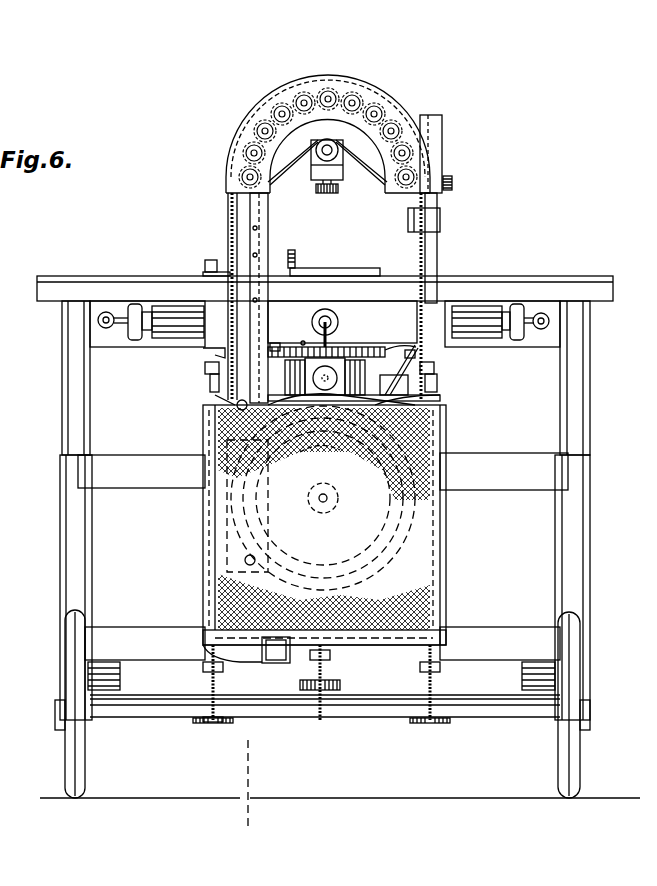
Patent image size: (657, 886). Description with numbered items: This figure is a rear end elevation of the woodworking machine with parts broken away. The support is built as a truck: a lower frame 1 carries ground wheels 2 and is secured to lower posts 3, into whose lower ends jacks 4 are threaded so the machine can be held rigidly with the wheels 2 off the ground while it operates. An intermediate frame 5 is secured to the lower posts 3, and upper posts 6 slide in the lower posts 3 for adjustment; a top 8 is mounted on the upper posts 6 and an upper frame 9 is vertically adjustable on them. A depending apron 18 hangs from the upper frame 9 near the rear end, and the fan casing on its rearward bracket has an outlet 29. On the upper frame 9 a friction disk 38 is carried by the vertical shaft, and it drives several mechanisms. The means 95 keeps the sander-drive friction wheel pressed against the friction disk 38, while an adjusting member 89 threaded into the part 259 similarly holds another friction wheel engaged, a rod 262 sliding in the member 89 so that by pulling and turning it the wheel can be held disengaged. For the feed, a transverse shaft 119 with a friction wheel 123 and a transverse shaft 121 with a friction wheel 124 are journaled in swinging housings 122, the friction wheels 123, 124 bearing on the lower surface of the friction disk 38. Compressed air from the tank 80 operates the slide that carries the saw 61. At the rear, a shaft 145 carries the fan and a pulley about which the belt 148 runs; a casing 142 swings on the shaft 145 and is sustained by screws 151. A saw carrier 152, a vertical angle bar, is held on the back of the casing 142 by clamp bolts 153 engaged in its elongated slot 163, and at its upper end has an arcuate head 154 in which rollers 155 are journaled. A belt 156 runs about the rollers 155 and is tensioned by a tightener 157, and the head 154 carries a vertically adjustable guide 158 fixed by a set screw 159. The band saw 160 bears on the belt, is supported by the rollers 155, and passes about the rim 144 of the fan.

The lower frame 1 is at (130, 632).
The ground wheels 2 is at (87, 775).
The lower posts 3 is at (70, 540).
The jacks 4 is at (62, 740).
The intermediate frame 5 is at (524, 470).
The upper posts 6 is at (70, 403).
The top 8 is at (528, 276).
The upper frame 9 is at (545, 345).
The apron 18 is at (215, 355).
The outlet 29 is at (276, 660).
The friction disk 38 is at (368, 360).
The saw 61 is at (300, 246).
The tank 80 is at (333, 328).
The adjusting member 89 is at (510, 345).
The means for maintaining friction wheel engaged 95 is at (106, 312).
The transverse shaft 119 is at (296, 320).
The transverse shaft 121 is at (410, 404).
The housings 122 is at (215, 380).
The friction wheel 123 is at (276, 352).
The friction wheel 124 is at (430, 352).
The casing 142 is at (443, 574).
The rim 144 is at (420, 525).
The shaft 145 is at (328, 498).
The belt 148 is at (300, 430).
The screws 151 is at (342, 686).
The saw carrier 152 is at (266, 208).
The clamp bolts 153 is at (215, 418).
The arcuate head 154 is at (392, 120).
The rollers 155 is at (287, 100).
The belt 156 is at (295, 158).
The tightener 157 is at (333, 196).
The guide 158 is at (440, 210).
The set screw 159 is at (478, 166).
The band saw 160 is at (424, 276).
The elongated slot 163 is at (238, 218).
The part 259 is at (480, 318).
The rod 262 is at (546, 318).